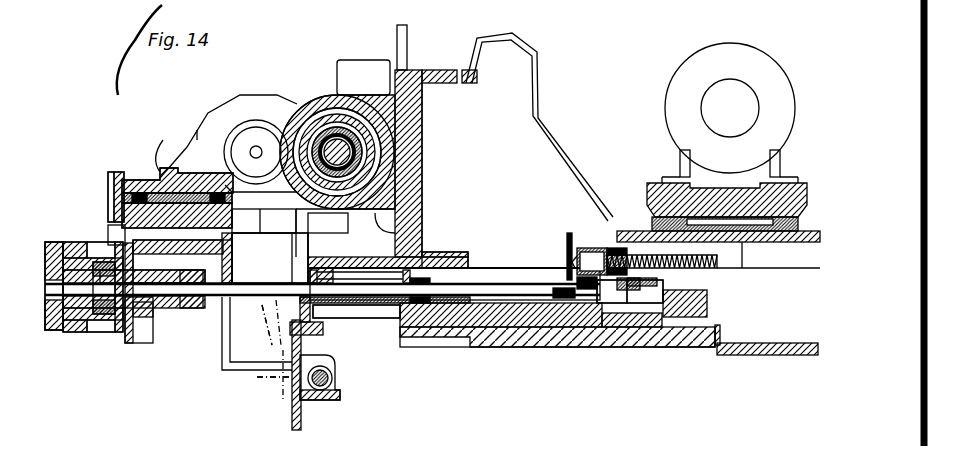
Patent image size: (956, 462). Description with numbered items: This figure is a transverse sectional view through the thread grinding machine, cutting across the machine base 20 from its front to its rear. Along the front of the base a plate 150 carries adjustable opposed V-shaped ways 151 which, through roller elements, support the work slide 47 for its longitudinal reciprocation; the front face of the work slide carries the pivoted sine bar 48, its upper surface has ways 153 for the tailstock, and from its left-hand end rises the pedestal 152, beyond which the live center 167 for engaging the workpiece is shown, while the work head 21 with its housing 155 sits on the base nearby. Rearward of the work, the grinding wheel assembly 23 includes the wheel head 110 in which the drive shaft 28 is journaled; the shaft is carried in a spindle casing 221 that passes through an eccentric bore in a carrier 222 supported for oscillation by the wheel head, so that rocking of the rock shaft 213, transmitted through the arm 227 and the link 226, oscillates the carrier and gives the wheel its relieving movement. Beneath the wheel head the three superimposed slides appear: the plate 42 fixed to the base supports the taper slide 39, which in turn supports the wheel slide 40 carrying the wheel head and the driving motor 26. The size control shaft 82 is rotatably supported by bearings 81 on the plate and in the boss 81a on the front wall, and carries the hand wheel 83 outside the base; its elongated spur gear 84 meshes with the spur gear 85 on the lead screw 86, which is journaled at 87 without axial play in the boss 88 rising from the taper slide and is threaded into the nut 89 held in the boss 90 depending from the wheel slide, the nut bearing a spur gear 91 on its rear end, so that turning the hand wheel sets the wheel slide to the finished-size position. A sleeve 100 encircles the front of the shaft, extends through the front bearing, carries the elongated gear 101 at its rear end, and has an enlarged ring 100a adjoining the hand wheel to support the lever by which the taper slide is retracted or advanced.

The machine base 20 is at (292, 420).
The work head 21 is at (228, 96).
The grinding wheel assembly 23 is at (352, 60).
The driving motor 26 is at (678, 97).
The drive shaft 28 is at (340, 158).
The taper slide 39 is at (365, 308).
The wheel slide 40 is at (312, 263).
The plate 42 is at (480, 328).
The work slide 47 is at (148, 183).
The sine bar 48 is at (108, 190).
The bearings 81 is at (152, 283).
The boss 81a is at (148, 312).
The shaft 82 is at (485, 283).
The hand wheel 83 is at (55, 332).
The elongated spur gear 84 is at (566, 300).
The spur gear 85 is at (568, 238).
The lead screw 86 is at (742, 268).
The journal 87 is at (577, 256).
The boss 88 is at (592, 250).
The nut 89 is at (612, 262).
The boss 90 is at (647, 298).
The spur gear 91 is at (690, 283).
The sleeve 100 is at (100, 332).
The enlarged ring 100a is at (75, 338).
The elongated gear 101 is at (118, 243).
The wheel head 110 is at (323, 95).
The plate 150 is at (233, 226).
The V-shaped ways 151 is at (114, 196).
The pedestal 152 is at (197, 130).
The ways 153 is at (167, 145).
The housing 155 is at (282, 102).
The live center 167 is at (252, 153).
The rock shaft 213 is at (334, 378).
The spindle casing 221 is at (345, 164).
The carrier 222 is at (350, 171).
The link 226 is at (250, 321).
The arm 227 is at (285, 383).